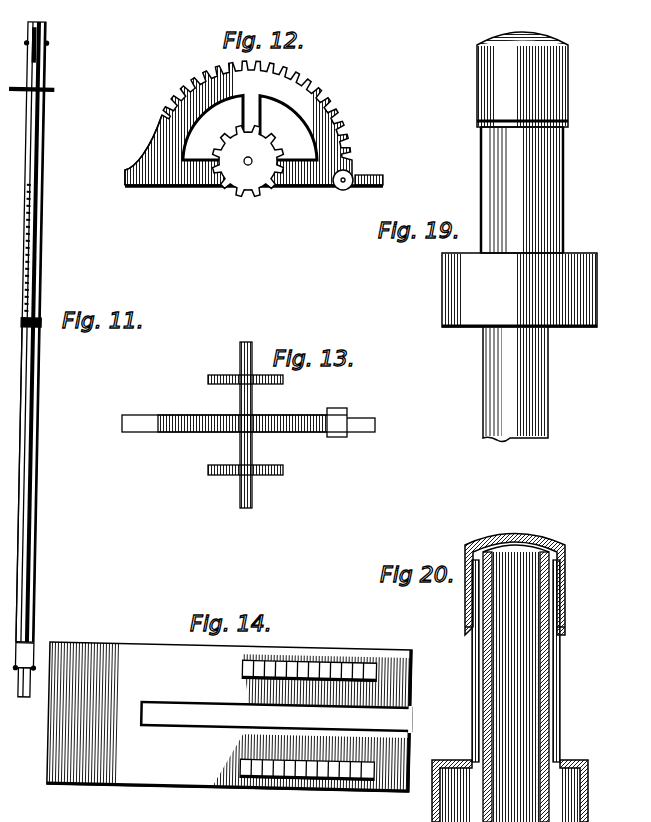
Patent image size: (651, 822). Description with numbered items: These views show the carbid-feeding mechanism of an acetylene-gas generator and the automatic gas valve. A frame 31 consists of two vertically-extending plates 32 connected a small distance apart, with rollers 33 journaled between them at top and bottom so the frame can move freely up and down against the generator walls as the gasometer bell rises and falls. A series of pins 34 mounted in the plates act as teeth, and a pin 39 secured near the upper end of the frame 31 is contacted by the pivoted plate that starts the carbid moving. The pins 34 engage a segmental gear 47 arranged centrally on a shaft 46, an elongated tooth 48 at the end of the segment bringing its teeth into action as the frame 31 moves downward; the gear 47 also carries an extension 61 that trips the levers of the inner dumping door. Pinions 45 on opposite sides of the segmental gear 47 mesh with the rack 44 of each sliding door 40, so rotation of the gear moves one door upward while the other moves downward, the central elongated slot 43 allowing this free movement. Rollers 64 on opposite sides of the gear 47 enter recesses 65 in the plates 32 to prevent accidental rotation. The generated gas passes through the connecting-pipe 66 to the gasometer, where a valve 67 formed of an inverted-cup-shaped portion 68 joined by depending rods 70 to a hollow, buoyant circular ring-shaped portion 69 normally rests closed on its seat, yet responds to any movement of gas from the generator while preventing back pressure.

In FIG. 11, the frame 31 is at (47, 332).
In FIG. 11, the vertically-extending plates 32 is at (20, 444).
In FIG. 11, the rollers 33 is at (47, 39).
In FIG. 11, the pins 34 is at (40, 226).
In FIG. 11, the pin 39 is at (44, 88).
In FIG. 14, the door 40 is at (229, 717).
In FIG. 14, the elongated slot 43 is at (185, 716).
In FIG. 14, the rack 44 is at (335, 662).
In FIG. 12, the pinions 45 is at (243, 182).
In FIG. 13, the pinions 45 is at (225, 375).
In FIG. 14, the pinions 45 is at (308, 765).
In FIG. 12, the shaft 46 is at (246, 164).
In FIG. 13, the shaft 46 is at (252, 448).
In FIG. 12, the segmental gear 47 is at (317, 116).
In FIG. 13, the segmental gear 47 is at (288, 418).
In FIG. 12, the elongated tooth 48 is at (362, 178).
In FIG. 13, the elongated tooth 48 is at (362, 425).
In FIG. 12, the extension 61 is at (125, 172).
In FIG. 12, the rollers 64 is at (340, 189).
In FIG. 13, the rollers 64 is at (340, 409).
In FIG. 11, the recesses 65 is at (38, 346).
In FIG. 19, the connecting-pipe 66 is at (549, 378).
In FIG. 19, the valve 67 is at (547, 190).
In FIG. 20, the valve 67 is at (542, 683).
In FIG. 19, the inverted-cup-shaped portion 68 is at (569, 86).
In FIG. 20, the inverted-cup-shaped portion 68 is at (565, 589).
In FIG. 19, the circular ring-shaped portion 69 is at (597, 286).
In FIG. 20, the circular ring-shaped portion 69 is at (588, 802).
In FIG. 19, the depending rods 70 is at (480, 173).
In FIG. 20, the depending rods 70 is at (471, 712).